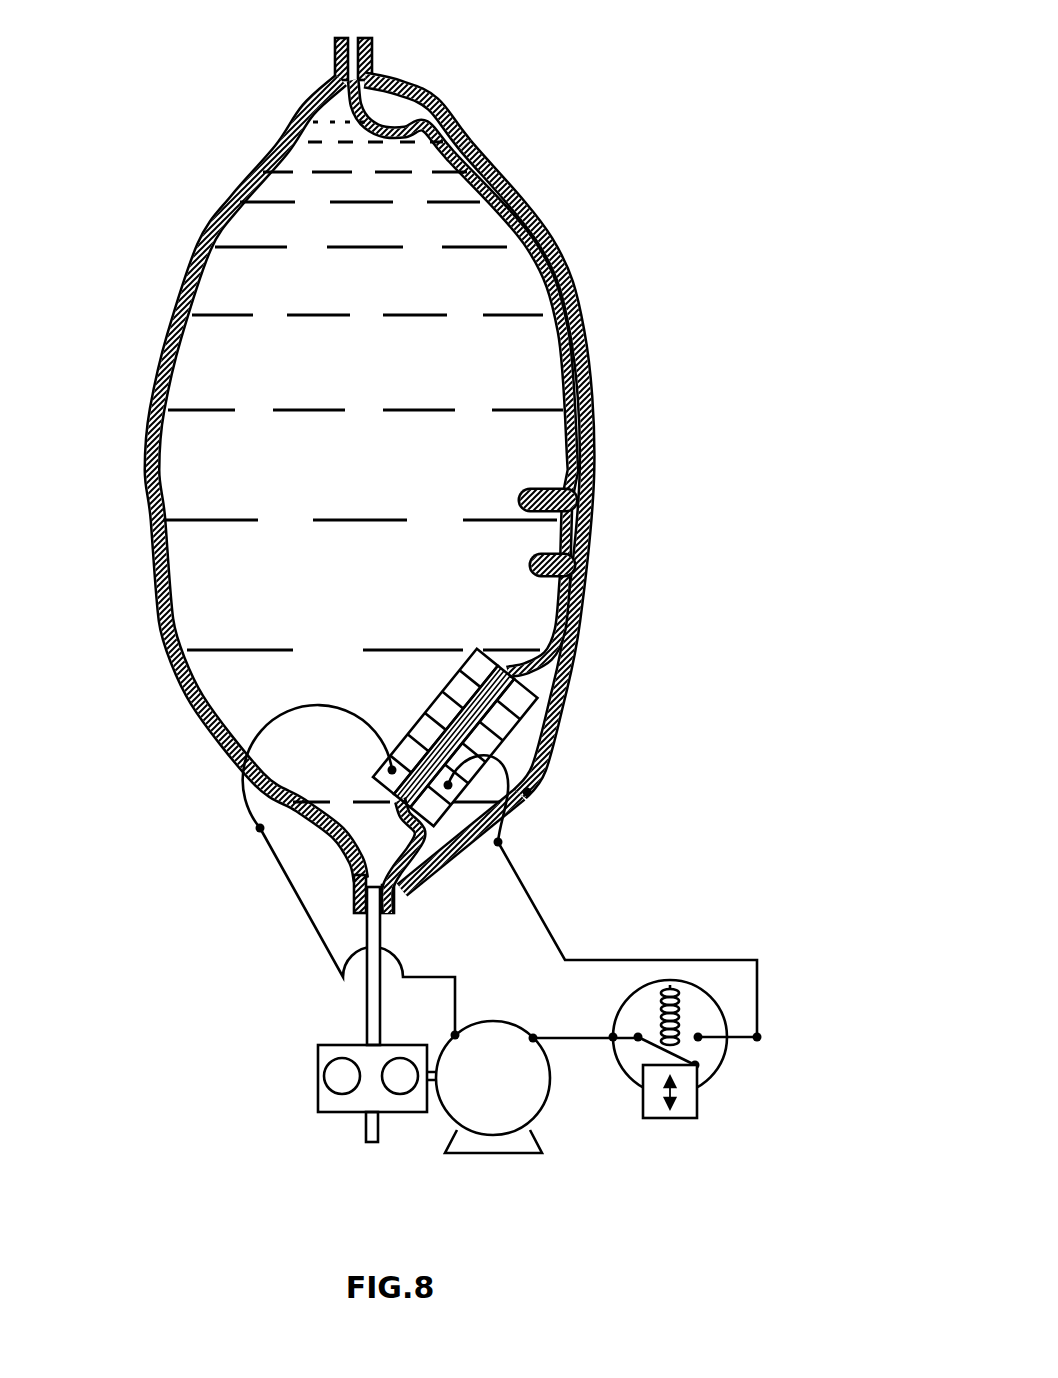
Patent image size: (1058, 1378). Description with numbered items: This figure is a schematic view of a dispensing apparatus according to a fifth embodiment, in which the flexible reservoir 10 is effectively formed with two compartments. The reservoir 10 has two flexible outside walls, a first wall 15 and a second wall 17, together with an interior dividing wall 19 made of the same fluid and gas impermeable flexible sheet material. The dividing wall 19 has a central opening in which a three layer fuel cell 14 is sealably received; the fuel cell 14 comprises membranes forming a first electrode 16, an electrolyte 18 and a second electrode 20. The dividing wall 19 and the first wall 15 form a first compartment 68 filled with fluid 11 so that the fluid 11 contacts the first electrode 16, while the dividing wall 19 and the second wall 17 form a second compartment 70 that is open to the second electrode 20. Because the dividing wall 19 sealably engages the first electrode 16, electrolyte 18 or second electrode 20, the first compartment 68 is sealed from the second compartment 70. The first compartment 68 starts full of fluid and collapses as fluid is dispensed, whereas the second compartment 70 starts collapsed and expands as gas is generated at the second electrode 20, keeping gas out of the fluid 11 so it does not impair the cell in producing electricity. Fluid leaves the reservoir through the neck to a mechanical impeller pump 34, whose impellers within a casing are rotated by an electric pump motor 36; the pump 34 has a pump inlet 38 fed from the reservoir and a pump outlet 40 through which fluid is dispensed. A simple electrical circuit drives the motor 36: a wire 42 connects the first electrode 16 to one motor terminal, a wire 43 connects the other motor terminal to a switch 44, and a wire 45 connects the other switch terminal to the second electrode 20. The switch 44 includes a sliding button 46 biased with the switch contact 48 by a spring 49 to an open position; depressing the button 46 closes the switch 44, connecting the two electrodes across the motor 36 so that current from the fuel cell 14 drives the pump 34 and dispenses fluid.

The flexible reservoir 10 is at (362, 475).
The fluid 11 is at (356, 460).
The three layer fuel cell 14 is at (493, 714).
The first wall 15 is at (198, 258).
The first electrode 16 is at (423, 710).
The second wall 17 is at (553, 260).
The electrolyte 18 is at (540, 690).
The dividing wall 19 is at (533, 272).
The second electrode 20 is at (527, 792).
The mechanical impeller pump 34 is at (318, 1070).
The electric pump motor 36 is at (478, 1131).
The pump inlet 38 is at (352, 1043).
The pump outlet 40 is at (366, 1135).
The wire 42 is at (285, 873).
The wire 43 is at (582, 1037).
The switch 44 is at (746, 1038).
The wire 45 is at (757, 995).
The sliding button 46 is at (665, 1118).
The switch contact 48 is at (655, 1045).
The spring 49 is at (677, 1000).
The first compartment 68 is at (250, 540).
The second compartment 70 is at (400, 103).